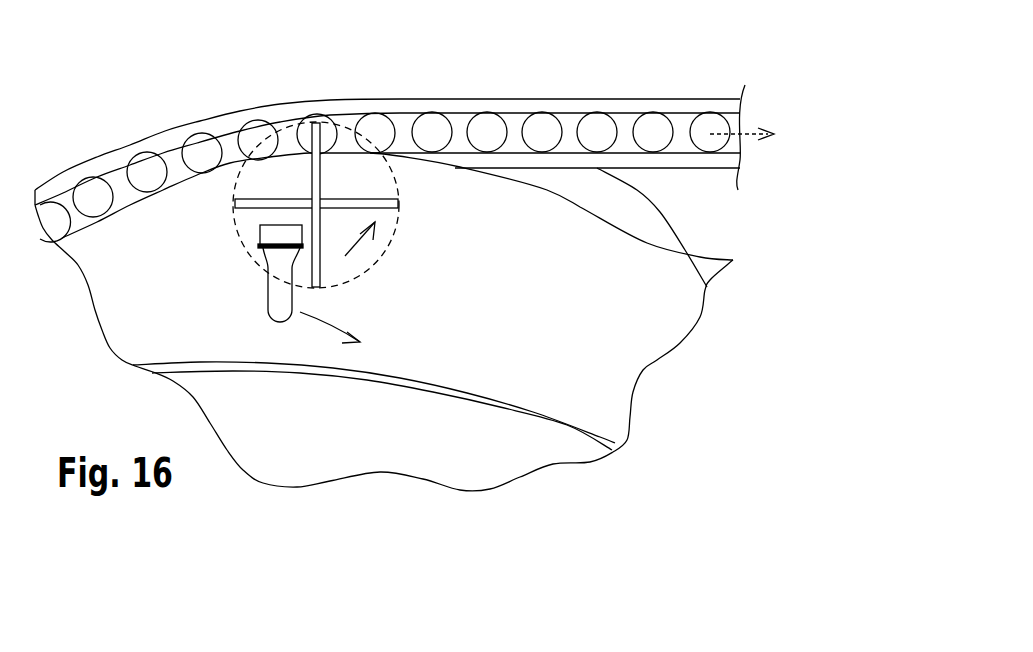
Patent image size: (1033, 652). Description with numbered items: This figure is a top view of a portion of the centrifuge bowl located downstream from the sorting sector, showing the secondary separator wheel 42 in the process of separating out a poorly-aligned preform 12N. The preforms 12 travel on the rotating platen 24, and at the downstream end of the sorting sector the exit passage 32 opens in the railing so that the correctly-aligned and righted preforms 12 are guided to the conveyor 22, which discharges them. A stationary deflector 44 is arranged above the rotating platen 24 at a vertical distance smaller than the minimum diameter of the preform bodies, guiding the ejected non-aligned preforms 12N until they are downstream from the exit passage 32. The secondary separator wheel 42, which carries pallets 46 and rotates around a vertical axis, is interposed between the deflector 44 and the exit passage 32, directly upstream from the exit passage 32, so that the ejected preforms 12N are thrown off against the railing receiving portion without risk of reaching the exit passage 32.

The preforms 12 is at (200, 150).
The poorly-aligned preforms 12N is at (278, 298).
The conveyor 22 is at (570, 128).
The rotating platen 24 is at (615, 332).
The exit passage 32 is at (402, 135).
The secondary separator wheel 42 is at (343, 232).
The deflector 44 is at (465, 393).
The pallets 46 is at (322, 274).